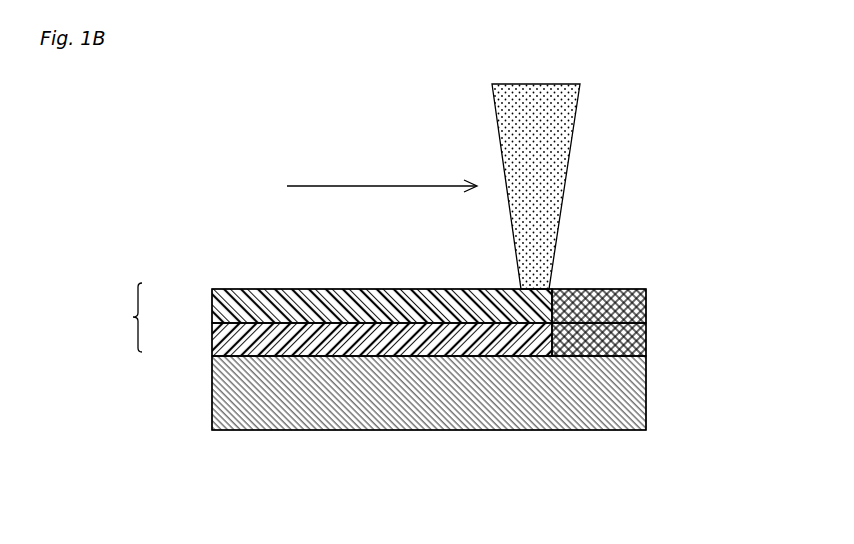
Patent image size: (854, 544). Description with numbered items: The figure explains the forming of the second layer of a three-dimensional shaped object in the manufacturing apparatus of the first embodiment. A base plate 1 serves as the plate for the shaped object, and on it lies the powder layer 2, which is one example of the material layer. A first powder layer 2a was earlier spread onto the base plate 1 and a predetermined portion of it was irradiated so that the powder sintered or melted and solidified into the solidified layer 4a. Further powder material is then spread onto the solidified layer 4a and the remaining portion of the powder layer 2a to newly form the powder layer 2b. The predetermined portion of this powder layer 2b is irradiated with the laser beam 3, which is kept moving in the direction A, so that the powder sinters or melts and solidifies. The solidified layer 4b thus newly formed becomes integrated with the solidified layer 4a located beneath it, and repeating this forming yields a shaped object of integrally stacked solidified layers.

The base plate 1 is at (390, 413).
The powder layer 2 is at (655, 323).
The powder layer 2a is at (658, 324).
The powder layer 2b is at (658, 290).
The laser beam 3 is at (558, 178).
The solidified layer 4a is at (211, 343).
The solidified layer 4b is at (211, 308).
The direction of laser beam movement A is at (382, 186).